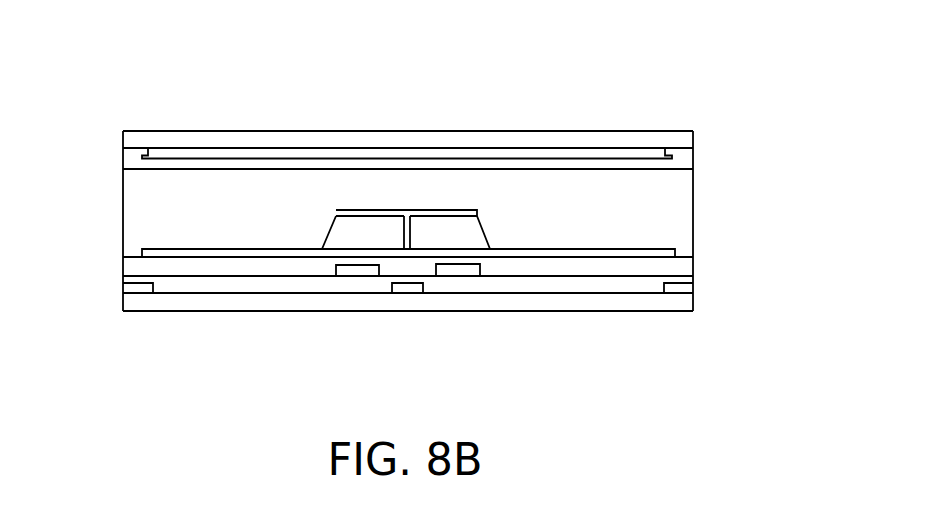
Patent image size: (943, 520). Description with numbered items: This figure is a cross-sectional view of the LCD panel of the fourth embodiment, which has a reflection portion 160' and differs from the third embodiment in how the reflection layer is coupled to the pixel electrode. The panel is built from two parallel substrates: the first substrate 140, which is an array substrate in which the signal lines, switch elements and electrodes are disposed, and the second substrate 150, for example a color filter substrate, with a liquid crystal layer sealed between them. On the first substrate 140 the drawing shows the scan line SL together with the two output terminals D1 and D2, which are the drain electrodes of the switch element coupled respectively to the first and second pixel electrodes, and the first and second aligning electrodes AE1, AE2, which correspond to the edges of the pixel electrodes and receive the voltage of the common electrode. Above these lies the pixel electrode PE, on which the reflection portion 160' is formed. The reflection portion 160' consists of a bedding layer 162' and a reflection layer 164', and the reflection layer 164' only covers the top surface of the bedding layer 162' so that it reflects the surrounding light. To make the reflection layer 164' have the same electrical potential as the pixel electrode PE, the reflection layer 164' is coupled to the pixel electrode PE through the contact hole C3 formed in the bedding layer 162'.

The reflection portion 160' is at (507, 124).
The reflection layer 164' is at (459, 135).
The bedding layer 162' is at (503, 152).
The contact hole C3 is at (404, 198).
The second substrate 150 is at (708, 152).
The first substrate 140 is at (708, 288).
The pixel electrode PE is at (253, 252).
The second output terminal D2 is at (340, 270).
The first output terminal D1 is at (465, 270).
The scan line SL is at (398, 290).
The second aligning electrode AE2 is at (135, 288).
The first aligning electrode AE1 is at (677, 290).